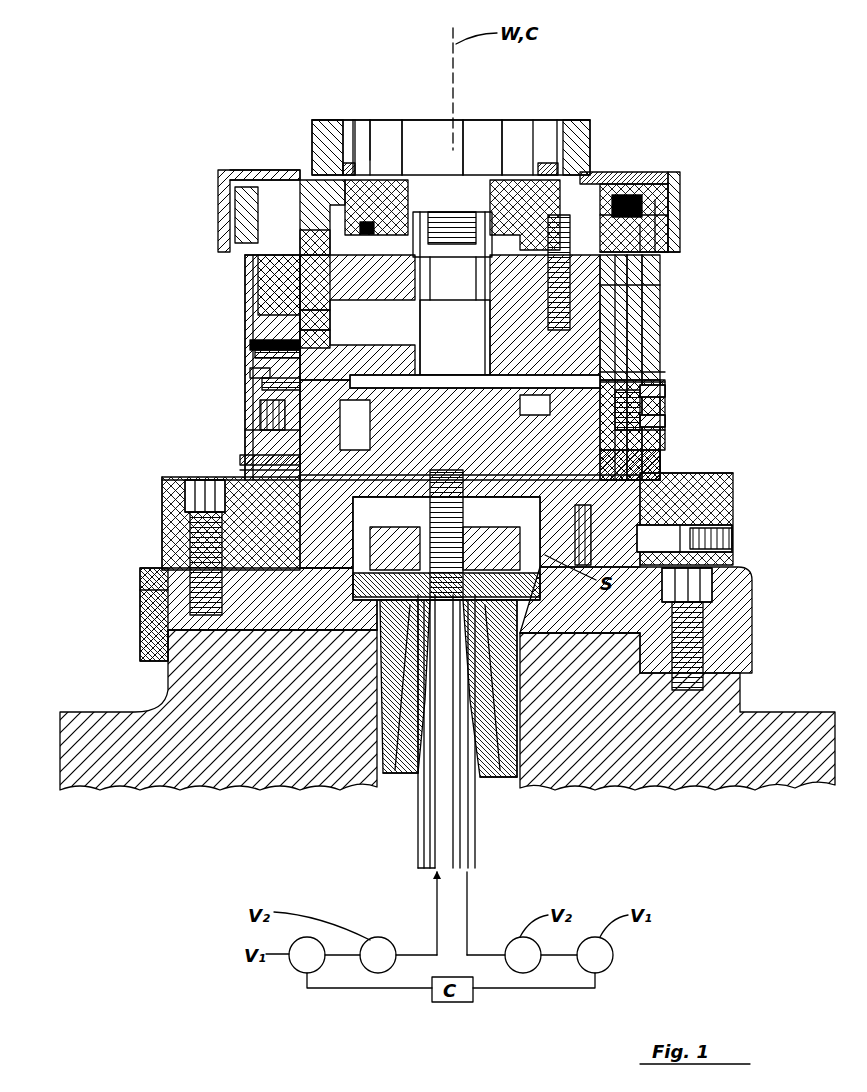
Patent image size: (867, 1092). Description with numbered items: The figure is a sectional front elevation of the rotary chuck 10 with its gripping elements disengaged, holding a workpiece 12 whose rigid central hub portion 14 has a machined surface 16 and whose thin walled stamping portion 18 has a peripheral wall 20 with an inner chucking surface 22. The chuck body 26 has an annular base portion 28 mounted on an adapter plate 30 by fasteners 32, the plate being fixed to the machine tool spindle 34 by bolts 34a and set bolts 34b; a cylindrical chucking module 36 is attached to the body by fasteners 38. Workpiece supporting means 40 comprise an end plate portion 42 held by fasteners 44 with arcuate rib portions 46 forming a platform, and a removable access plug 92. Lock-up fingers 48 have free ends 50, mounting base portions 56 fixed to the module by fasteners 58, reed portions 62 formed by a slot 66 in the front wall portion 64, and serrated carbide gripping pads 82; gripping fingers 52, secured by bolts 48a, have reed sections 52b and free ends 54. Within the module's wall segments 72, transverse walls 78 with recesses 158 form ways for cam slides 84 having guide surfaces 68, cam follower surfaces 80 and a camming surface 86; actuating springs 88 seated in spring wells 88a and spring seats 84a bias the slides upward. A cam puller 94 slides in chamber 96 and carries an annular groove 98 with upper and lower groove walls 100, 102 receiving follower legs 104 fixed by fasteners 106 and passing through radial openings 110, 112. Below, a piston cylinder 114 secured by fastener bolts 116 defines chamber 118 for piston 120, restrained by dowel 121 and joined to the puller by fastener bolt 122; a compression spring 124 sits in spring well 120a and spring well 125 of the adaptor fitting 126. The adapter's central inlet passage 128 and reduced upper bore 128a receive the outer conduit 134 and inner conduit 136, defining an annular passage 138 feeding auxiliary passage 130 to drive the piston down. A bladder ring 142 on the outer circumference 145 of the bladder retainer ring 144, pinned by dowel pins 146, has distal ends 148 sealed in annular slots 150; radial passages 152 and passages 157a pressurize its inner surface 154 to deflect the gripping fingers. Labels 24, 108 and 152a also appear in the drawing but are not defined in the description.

The chuck 10 is at (166, 285).
The workpiece 12 is at (602, 116).
The central hub portion 14 is at (565, 118).
The machined surface 16 is at (596, 118).
The stamping portion 18 is at (285, 172).
The peripheral wall 20 is at (682, 238).
The inner chucking surface 22 is at (666, 258).
The right housing cover 24 is at (682, 185).
The chuck body 26 is at (158, 493).
The annular base portion 28 is at (165, 548).
The adapter plate 30 is at (145, 612).
The fasteners 32 is at (195, 580).
The machine tool spindle 34 is at (126, 708).
The bolts 34a is at (745, 612).
The set bolts 34b is at (735, 538).
The chucking module 36 is at (245, 402).
The fasteners 38 is at (260, 418).
The workpiece supporting means 40 is at (302, 190).
The end plate portion 42 is at (368, 160).
The fasteners 44 is at (500, 210).
The arcuate rib portions 46 is at (328, 120).
The lock-up fingers 48 is at (670, 383).
The bolts 48a is at (250, 373).
The free ends 50 is at (652, 200).
The gripping fingers 52 is at (300, 354).
The reed sections 52b is at (250, 348).
The free ends 54 is at (235, 230).
The mounting base portion 56 is at (665, 440).
The fasteners 58 is at (665, 410).
The reed portion 62 is at (660, 320).
The front wall portion 64 is at (656, 298).
The slot 66 is at (658, 342).
The guide surfaces 68 is at (660, 286).
The wall segments 72 is at (618, 215).
The transverse walls 78 is at (625, 192).
The cam follower surfaces 80 is at (680, 242).
The gripping pads 82 is at (680, 213).
The cam slides 84 is at (658, 312).
The spring seats 84a is at (672, 456).
The camming surface 86 is at (677, 192).
The actuating springs 88 is at (650, 465).
The spring wells 88a is at (720, 476).
The access plug 92 is at (447, 290).
The cam puller 94 is at (472, 345).
The cylindrical chamber 96 is at (262, 395).
The annular groove 98 is at (240, 455).
The upper groove wall 100 is at (255, 430).
The lower groove wall 102 is at (240, 470).
The follower leg 104 is at (562, 388).
The fasteners 106 is at (665, 396).
The mid body 108 is at (480, 427).
The radial opening 110 is at (662, 372).
The radial opening 112 is at (668, 383).
The piston cylinder 114 is at (338, 599).
The fastener bolts 116 is at (735, 498).
The chamber 118 is at (336, 520).
The piston 120 is at (292, 578).
The spring well 120a is at (335, 637).
The dowel 121 is at (545, 655).
The fastener bolt 122 is at (408, 436).
The compression spring 124 is at (392, 676).
The spring well 125 is at (382, 760).
The adaptor fitting 126 is at (416, 805).
The central fluid inlet passage 128 is at (412, 772).
The reduced upper bore 128a is at (385, 775).
The auxiliary fluid passage 130 is at (556, 720).
The outer conduit 134 is at (420, 866).
The inner conduit 136 is at (433, 875).
The annular fluid delivery passage 138 is at (478, 855).
The bladder ring 142 is at (225, 176).
The bladder retainer ring 144 is at (345, 225).
The outer circumference 145 is at (270, 268).
The dowel pins 146 is at (565, 180).
The distal ends 148 is at (370, 222).
The annular slots 150 is at (352, 160).
The radial auxiliary fluid passages 152 is at (265, 310).
The edge 152a is at (148, 592).
The inner surface 154 is at (380, 210).
The passages 157a is at (168, 498).
The recesses 158 is at (610, 173).